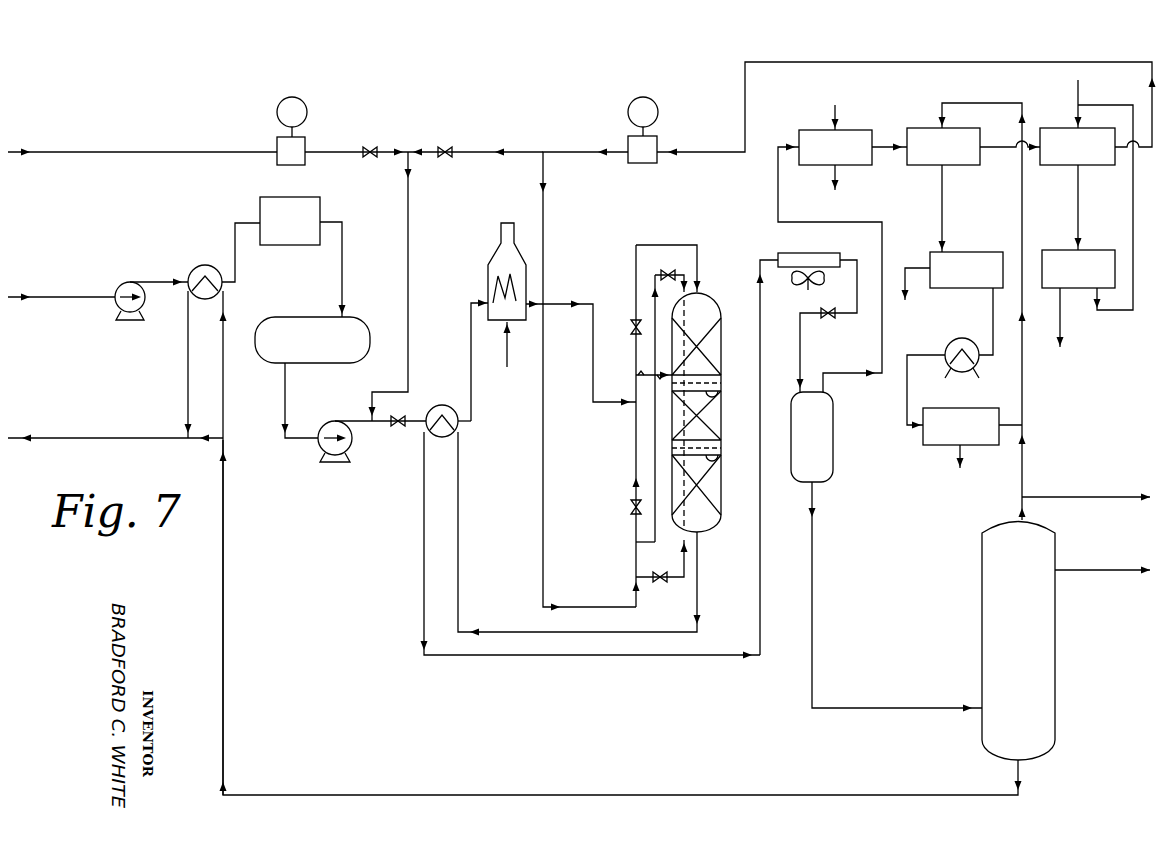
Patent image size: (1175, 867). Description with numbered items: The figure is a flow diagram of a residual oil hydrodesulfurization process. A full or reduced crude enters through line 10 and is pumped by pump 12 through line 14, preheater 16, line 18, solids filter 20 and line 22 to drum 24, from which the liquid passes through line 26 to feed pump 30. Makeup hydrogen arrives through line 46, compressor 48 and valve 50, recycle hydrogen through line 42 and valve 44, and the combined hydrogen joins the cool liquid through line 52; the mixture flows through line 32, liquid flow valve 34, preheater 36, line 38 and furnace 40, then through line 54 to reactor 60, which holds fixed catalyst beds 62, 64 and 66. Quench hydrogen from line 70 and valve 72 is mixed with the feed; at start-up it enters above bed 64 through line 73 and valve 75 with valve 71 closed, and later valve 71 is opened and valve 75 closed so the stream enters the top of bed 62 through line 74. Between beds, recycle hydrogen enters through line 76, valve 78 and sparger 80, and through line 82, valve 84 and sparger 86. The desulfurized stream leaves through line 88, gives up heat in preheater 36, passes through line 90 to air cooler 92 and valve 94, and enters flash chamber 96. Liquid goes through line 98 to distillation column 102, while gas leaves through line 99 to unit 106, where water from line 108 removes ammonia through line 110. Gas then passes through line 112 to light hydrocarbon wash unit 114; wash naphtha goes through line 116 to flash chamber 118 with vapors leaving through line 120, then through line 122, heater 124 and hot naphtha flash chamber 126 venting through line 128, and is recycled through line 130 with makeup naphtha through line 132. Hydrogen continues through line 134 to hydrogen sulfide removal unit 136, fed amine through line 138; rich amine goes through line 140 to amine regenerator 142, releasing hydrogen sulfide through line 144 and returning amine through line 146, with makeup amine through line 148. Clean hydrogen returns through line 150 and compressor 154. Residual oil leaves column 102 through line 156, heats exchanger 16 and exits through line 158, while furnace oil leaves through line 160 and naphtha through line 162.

The charge line 10 is at (119, 287).
The pump 12 is at (143, 306).
The line 14 is at (181, 281).
The preheater 16 is at (208, 266).
The line 18 is at (235, 232).
The solids filter 20 is at (320, 201).
The line 22 is at (342, 255).
The drum 24 is at (312, 317).
The line 26 is at (285, 397).
The feed pump 30 is at (348, 450).
The line 32 is at (357, 419).
The liquid flow valve 34 is at (400, 416).
The preheater 36 is at (455, 432).
The line 38 is at (471, 344).
The furnace 40 is at (509, 226).
The line 42 is at (538, 154).
The valve 44 is at (447, 148).
The line 46 is at (95, 152).
The compressor 48 is at (306, 160).
The valve 50 is at (370, 158).
The line 52 is at (408, 270).
The line 54 is at (593, 346).
The reactor 60 is at (716, 302).
The fixed catalyst bed 62 is at (721, 345).
The fixed catalyst bed 64 is at (721, 425).
The fixed catalyst bed 66 is at (705, 495).
The line 70 is at (578, 607).
The valve 71 is at (628, 325).
The valve 72 is at (634, 512).
The line 73 is at (660, 379).
The line 74 is at (697, 247).
The valve 75 is at (641, 378).
The line 76 is at (656, 312).
The quench hydrogen valve 78 is at (666, 272).
The sparger 80 is at (718, 393).
The line 82 is at (640, 580).
The quench hydrogen valve 84 is at (662, 584).
The sparger 86 is at (718, 460).
The line 88 is at (628, 632).
The line 90 is at (578, 655).
The air cooler 92 is at (760, 290).
The valve 94 is at (830, 308).
The flash chamber 96 is at (791, 440).
The line 98 is at (812, 592).
The line 99 is at (882, 232).
The distillation column 102 is at (1055, 668).
The unit 106 is at (805, 130).
The line 108 is at (838, 112).
The line 110 is at (830, 167).
The line 112 is at (872, 160).
The light hydrocarbon wash unit 114 is at (955, 165).
The line 116 is at (942, 230).
The flash chamber 118 is at (975, 253).
The line 120 is at (920, 266).
The line 122 is at (993, 296).
The heater 124 is at (979, 360).
The hot naphtha flash chamber 126 is at (970, 409).
The line 128 is at (963, 450).
The line 130 is at (1020, 200).
The line 132 is at (1022, 464).
The line 134 is at (1007, 118).
The hydrogen sulfide removal unit 136 is at (1085, 165).
The line 138 is at (1076, 120).
The line 140 is at (1076, 200).
The amine regenerator 142 is at (1090, 252).
The line 144 is at (1062, 326).
The line 146 is at (1124, 312).
The line 148 is at (1080, 88).
The line 150 is at (750, 66).
The compressor 154 is at (640, 164).
The line 156 is at (968, 795).
The line 158 is at (171, 436).
The line 160 is at (1078, 572).
The line 162 is at (1078, 500).